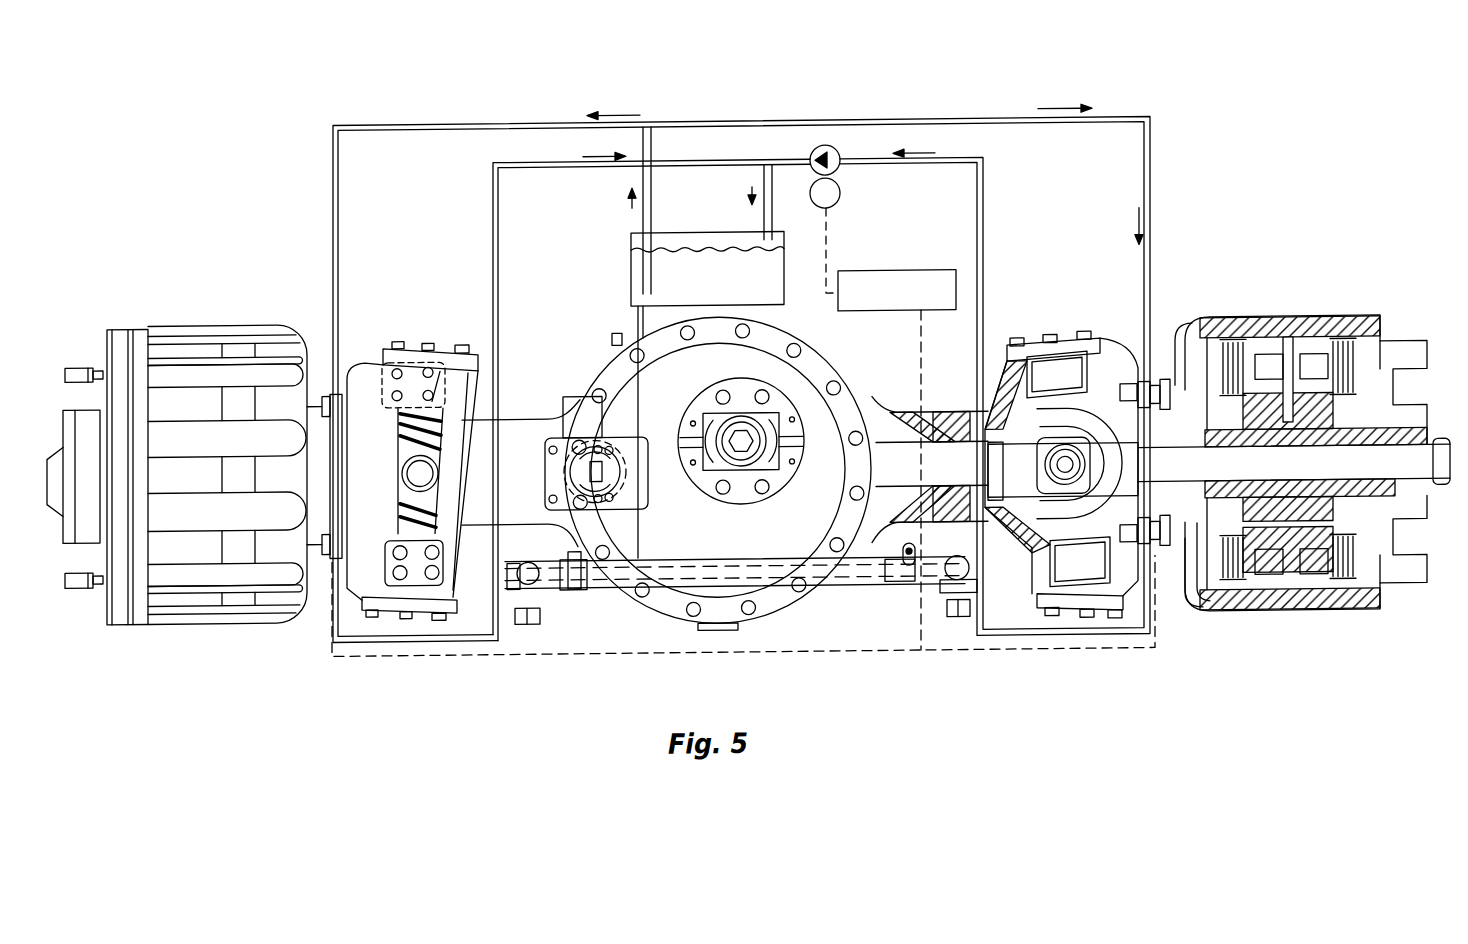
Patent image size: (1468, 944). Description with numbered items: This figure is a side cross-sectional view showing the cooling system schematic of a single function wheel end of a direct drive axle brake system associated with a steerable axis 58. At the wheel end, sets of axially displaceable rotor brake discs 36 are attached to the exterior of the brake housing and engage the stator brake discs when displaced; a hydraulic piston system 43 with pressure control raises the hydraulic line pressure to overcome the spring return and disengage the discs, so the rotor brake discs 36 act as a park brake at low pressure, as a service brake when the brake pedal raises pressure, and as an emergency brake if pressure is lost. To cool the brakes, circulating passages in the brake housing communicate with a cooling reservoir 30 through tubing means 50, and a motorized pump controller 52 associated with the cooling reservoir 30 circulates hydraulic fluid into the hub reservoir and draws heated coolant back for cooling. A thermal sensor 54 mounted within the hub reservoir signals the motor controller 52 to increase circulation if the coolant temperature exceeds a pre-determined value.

The cooling reservoir 30 is at (632, 283).
The rotor brake discs 36 is at (1234, 588).
The hydraulic piston system 43 is at (1294, 477).
The tubing means 50 is at (1141, 119).
The motorized pump controller 52 is at (896, 272).
The thermal sensor 54 is at (1188, 605).
The steerable axis 58 is at (412, 345).